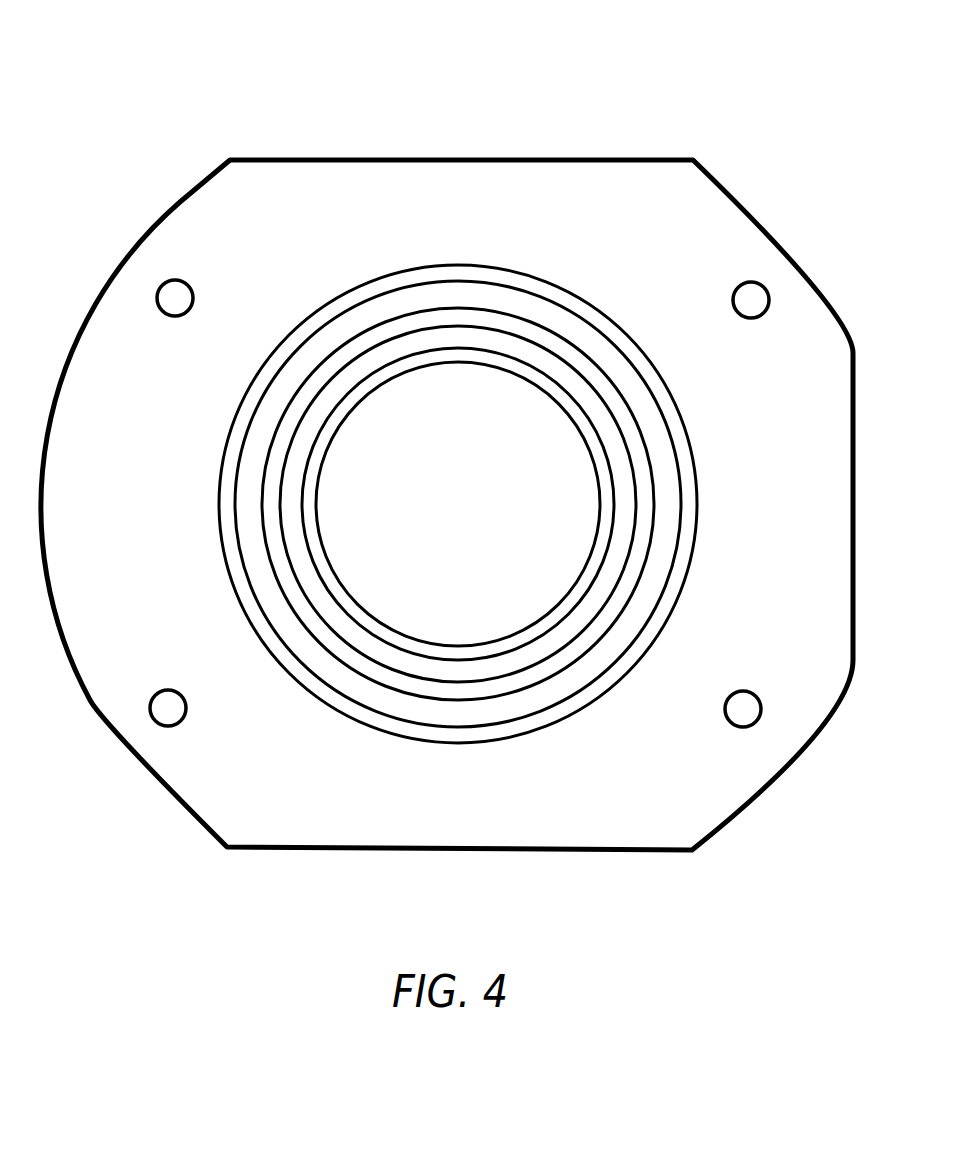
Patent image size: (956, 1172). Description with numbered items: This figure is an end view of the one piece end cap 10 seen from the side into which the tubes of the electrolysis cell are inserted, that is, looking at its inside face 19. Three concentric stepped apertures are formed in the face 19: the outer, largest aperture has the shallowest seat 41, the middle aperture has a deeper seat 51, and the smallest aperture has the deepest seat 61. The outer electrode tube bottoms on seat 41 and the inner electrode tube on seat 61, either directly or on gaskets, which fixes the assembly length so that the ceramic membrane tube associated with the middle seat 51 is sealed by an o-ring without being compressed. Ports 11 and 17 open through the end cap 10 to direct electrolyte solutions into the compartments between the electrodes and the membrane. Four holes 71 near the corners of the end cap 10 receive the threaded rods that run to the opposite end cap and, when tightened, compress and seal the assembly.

The one section end cap 10 is at (491, 100).
The port 11 is at (345, 325).
The port 17 is at (593, 395).
The inside face 19 is at (230, 229).
The seat 41 is at (375, 718).
The seat 51 is at (459, 690).
The seat 61 is at (543, 628).
The hole 71 is at (173, 295).